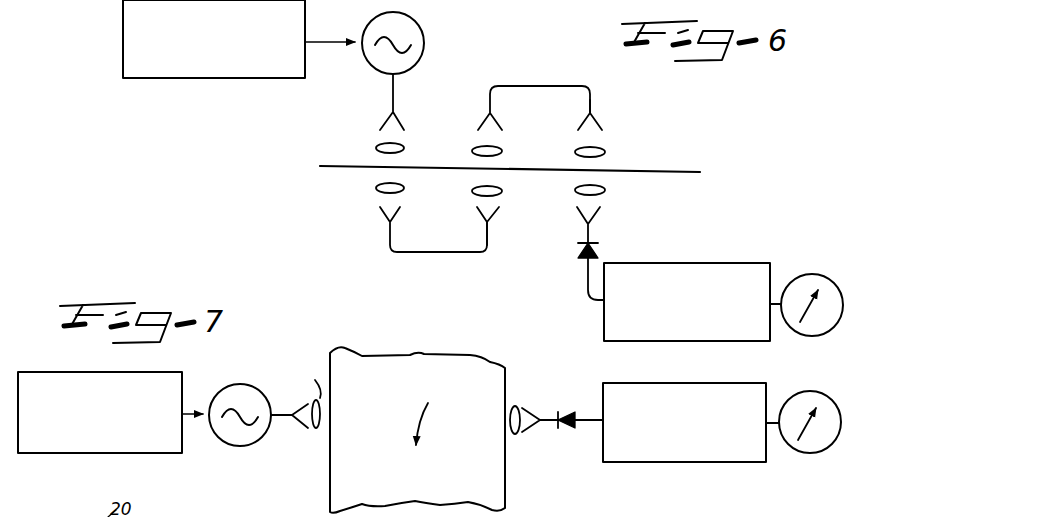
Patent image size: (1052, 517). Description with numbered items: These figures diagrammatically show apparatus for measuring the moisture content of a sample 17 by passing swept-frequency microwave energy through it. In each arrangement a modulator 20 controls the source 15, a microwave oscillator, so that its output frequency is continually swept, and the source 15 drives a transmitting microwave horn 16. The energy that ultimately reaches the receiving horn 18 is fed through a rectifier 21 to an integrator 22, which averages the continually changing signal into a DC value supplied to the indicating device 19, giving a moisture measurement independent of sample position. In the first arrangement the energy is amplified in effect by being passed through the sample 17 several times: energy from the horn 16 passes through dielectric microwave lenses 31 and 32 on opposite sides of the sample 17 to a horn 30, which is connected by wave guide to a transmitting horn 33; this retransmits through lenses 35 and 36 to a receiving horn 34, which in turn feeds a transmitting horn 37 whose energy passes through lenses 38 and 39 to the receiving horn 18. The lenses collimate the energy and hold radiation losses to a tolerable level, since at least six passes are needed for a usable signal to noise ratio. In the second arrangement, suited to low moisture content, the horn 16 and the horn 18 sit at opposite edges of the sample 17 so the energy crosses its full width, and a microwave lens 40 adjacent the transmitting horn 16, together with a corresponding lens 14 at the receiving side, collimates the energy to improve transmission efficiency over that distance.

In FIG. 7, the lens 14 is at (517, 407).
In FIG. 6, the source 15 is at (418, 26).
In FIG. 7, the source 15 is at (246, 385).
In FIG. 6, the transmitting microwave horn 16 is at (385, 122).
In FIG. 7, the transmitting microwave horn 16 is at (301, 432).
In FIG. 6, the sample 17 is at (700, 172).
In FIG. 7, the sample 17 is at (405, 367).
In FIG. 6, the receiving horn 18 is at (602, 222).
In FIG. 7, the receiving horn 18 is at (535, 412).
In FIG. 6, the indicating device 19 is at (812, 273).
In FIG. 7, the indicating device 19 is at (800, 455).
In FIG. 6, the modulator 20 is at (186, 80).
In FIG. 7, the modulator 20 is at (100, 372).
In FIG. 6, the rectifier 21 is at (577, 250).
In FIG. 7, the rectifier 21 is at (564, 432).
In FIG. 6, the integrator 22 is at (675, 262).
In FIG. 7, the integrator 22 is at (661, 464).
In FIG. 6, the horn 30 is at (378, 213).
In FIG. 6, the dielectric microwave lens 31 is at (378, 147).
In FIG. 6, the dielectric microwave lens 32 is at (378, 188).
In FIG. 6, the transmitting horn 33 is at (477, 213).
In FIG. 6, the receiving horn 34 is at (478, 119).
In FIG. 6, the dielectric microwave lens 35 is at (475, 190).
In FIG. 6, the dielectric microwave lens 36 is at (476, 152).
In FIG. 6, the transmitting horn 37 is at (604, 126).
In FIG. 6, the dielectric microwave lens 38 is at (604, 152).
In FIG. 6, the dielectric microwave lens 39 is at (604, 192).
In FIG. 7, the microwave lens 40 is at (306, 394).